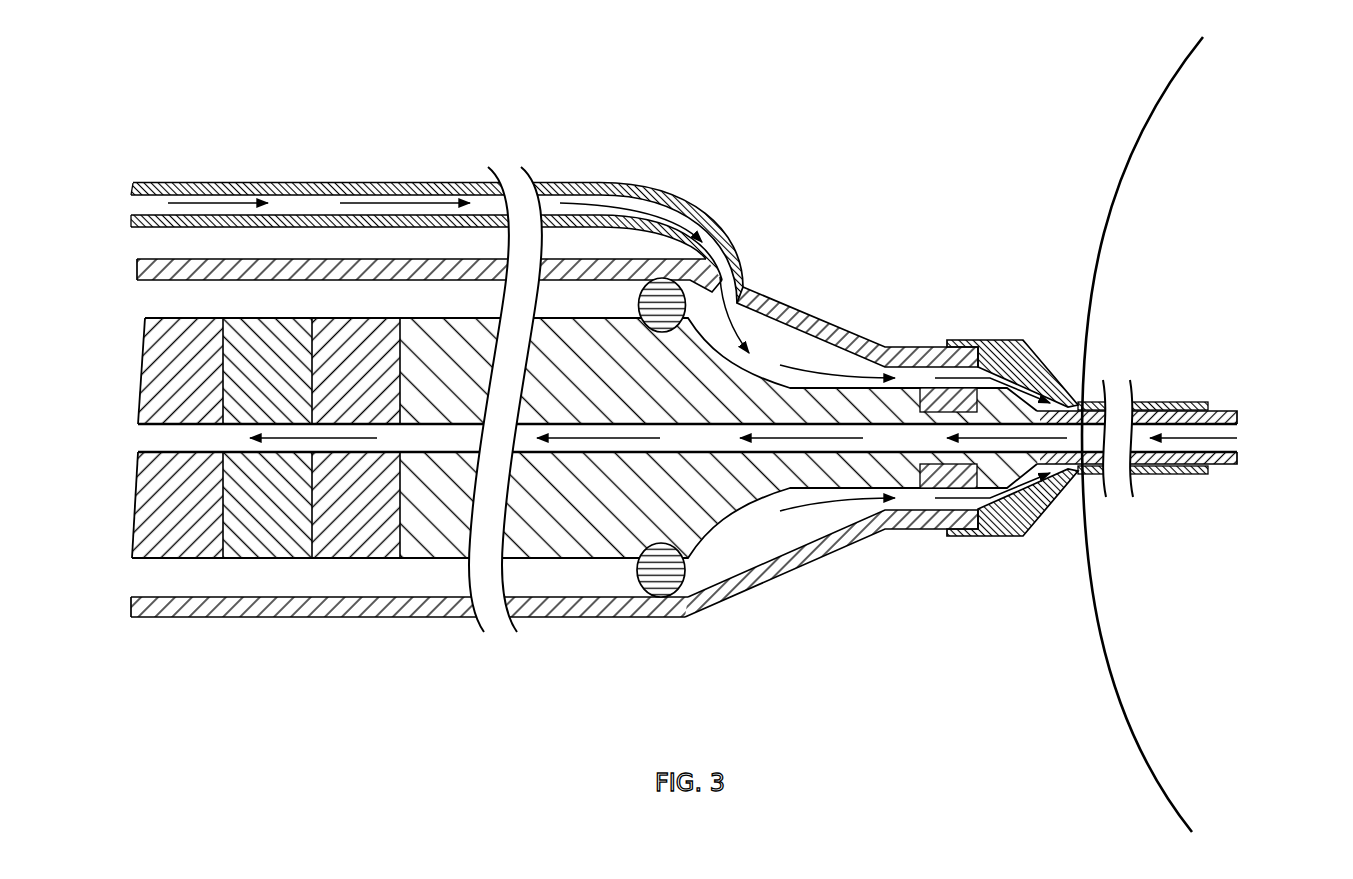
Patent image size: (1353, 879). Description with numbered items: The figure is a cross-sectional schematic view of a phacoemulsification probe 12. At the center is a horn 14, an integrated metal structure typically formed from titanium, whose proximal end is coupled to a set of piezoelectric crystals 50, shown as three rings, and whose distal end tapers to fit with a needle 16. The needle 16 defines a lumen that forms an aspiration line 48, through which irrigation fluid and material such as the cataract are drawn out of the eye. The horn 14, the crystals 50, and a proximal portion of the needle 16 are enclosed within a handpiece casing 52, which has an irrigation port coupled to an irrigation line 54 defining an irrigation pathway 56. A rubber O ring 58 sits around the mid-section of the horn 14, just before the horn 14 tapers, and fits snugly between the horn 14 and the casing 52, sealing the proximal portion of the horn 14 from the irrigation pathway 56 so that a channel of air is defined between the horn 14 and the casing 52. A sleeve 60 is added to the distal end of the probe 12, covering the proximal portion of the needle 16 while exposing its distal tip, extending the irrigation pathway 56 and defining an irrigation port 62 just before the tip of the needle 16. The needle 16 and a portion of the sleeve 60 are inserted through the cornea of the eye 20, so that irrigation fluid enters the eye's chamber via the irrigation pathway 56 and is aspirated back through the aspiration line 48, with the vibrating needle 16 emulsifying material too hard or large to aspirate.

The phacoemulsification probe 12 is at (803, 43).
The horn 14 is at (552, 562).
The needle 16 is at (1223, 403).
The eye 20 is at (1130, 155).
The aspiration line 48 is at (1244, 439).
The piezoelectric crystals 50 is at (193, 318).
The handpiece casing 52 is at (372, 183).
The irrigation line 54 is at (797, 337).
The irrigation pathway 56 is at (487, 210).
The O ring 58 is at (690, 583).
The sleeve 60 is at (993, 338).
The irrigation port 62 is at (1240, 470).